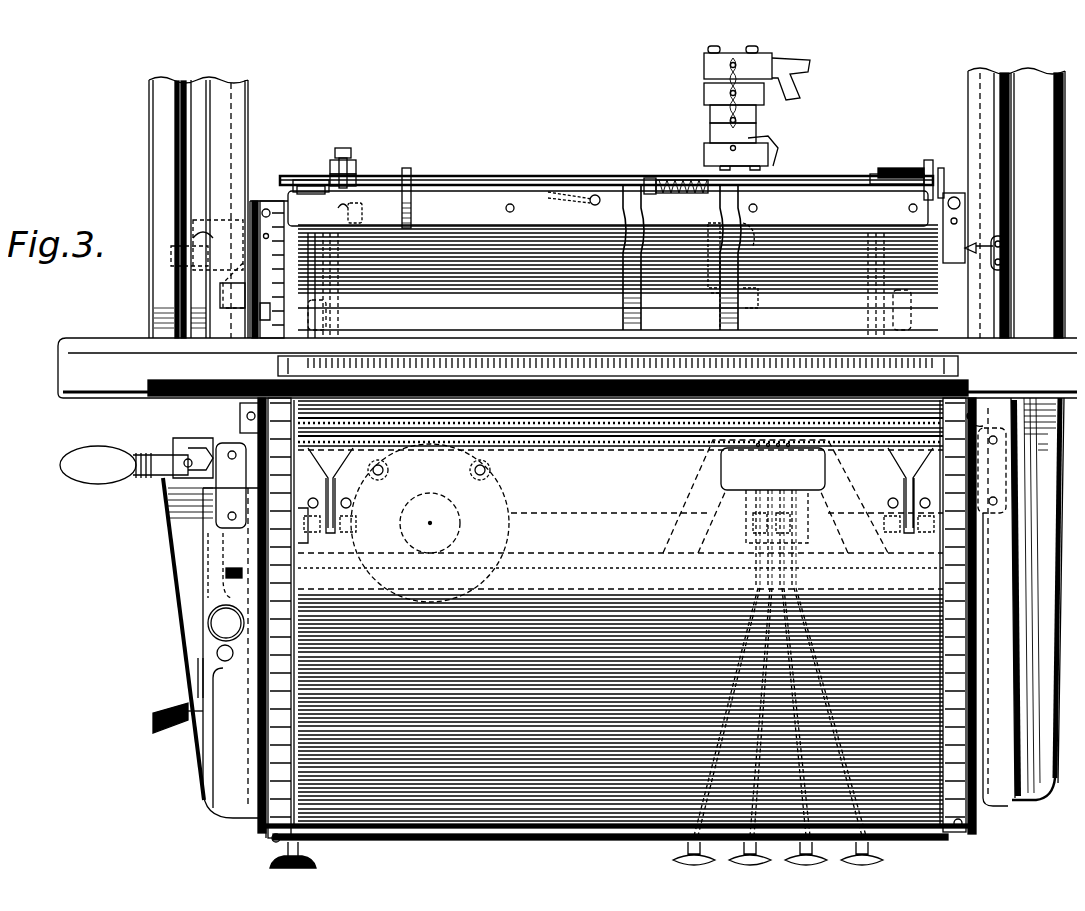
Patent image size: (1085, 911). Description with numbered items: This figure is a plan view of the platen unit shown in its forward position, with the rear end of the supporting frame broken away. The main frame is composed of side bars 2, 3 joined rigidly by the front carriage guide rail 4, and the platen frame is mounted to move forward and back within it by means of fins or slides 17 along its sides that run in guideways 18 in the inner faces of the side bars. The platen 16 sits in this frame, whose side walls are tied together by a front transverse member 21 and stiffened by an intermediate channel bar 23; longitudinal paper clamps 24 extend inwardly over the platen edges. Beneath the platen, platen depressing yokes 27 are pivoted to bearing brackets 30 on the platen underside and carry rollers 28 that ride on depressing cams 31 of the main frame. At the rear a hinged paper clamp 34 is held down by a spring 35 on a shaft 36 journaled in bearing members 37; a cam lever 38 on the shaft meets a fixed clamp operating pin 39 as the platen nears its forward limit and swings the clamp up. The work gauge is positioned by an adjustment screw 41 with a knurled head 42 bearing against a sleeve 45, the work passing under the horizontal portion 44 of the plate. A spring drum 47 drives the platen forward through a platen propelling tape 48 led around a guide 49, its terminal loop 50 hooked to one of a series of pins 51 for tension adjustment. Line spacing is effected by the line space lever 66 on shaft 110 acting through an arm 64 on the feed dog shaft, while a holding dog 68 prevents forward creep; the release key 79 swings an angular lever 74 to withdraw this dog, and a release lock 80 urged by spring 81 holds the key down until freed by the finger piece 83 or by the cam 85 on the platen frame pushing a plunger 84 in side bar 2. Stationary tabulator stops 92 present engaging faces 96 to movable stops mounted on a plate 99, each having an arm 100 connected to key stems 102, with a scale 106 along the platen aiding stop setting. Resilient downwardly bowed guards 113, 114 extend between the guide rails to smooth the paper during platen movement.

The side bar 2 is at (141, 164).
The side bar 3 is at (1036, 150).
The front carriage guide rail 4 is at (118, 340).
The platen 16 is at (727, 495).
The fins or slides 17 is at (245, 778).
The longitudinal grooves or guideways 18 is at (226, 106).
The transverse member 21 is at (474, 834).
The intermediate transverse channel bar 23 is at (620, 672).
The longitudinal paper clamps 24 is at (255, 826).
The platen depressing yokes 27 is at (288, 176).
The rollers 28 is at (302, 172).
The bearing brackets 30 is at (615, 490).
The depressing cams 31 is at (320, 306).
The hinged paper clamp 34 is at (832, 183).
The spring 35 is at (676, 172).
The shaft 36 is at (606, 164).
The bearing members 37 is at (403, 170).
The cam lever 38 is at (960, 205).
The fixed clamp operating pin 39 is at (975, 418).
The adjustment screw 41 is at (338, 140).
The knurled head 42 is at (348, 158).
The horizontal portion 44 is at (368, 209).
The sleeve 45 is at (352, 174).
The spring drum 47 is at (503, 488).
The platen propelling tape 48 is at (335, 290).
The guide 49 is at (335, 206).
The terminal loop 50 is at (582, 197).
The pins 51 is at (590, 186).
The arm 64 is at (232, 412).
The line space lever 66 is at (96, 477).
The holding dog 68 is at (185, 218).
The angular lever 74 is at (215, 288).
The release key 79 is at (200, 625).
The release lock 80 is at (205, 580).
The spring 81 is at (215, 536).
The finger piece 83 is at (195, 657).
The plunger 84 is at (268, 592).
The cam 85 is at (262, 522).
The stationary line space tabulator stops 92 is at (696, 60).
The engaging faces 96 is at (790, 86).
The plate 99 is at (713, 458).
The arm 100 is at (790, 539).
The stems 102 is at (797, 557).
The scale 106 is at (935, 562).
The shaft 110 is at (166, 132).
The guard 113 is at (648, 306).
The guard 114 is at (735, 306).